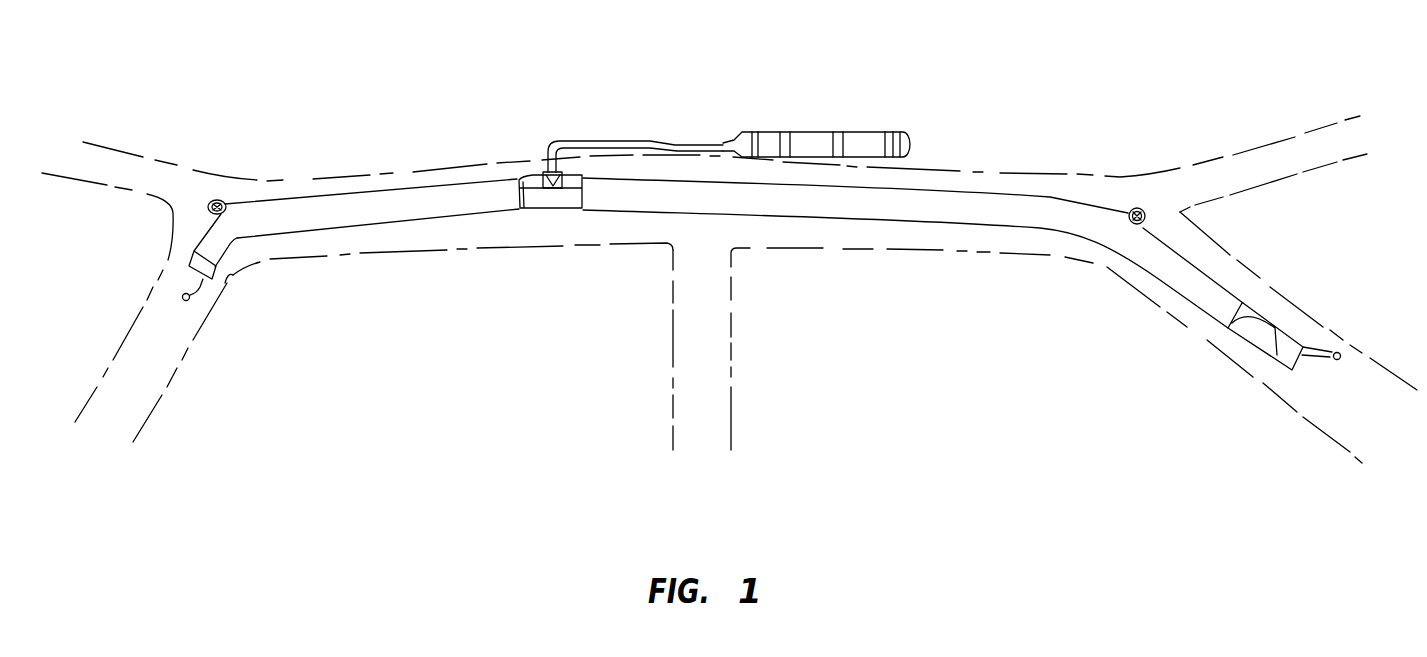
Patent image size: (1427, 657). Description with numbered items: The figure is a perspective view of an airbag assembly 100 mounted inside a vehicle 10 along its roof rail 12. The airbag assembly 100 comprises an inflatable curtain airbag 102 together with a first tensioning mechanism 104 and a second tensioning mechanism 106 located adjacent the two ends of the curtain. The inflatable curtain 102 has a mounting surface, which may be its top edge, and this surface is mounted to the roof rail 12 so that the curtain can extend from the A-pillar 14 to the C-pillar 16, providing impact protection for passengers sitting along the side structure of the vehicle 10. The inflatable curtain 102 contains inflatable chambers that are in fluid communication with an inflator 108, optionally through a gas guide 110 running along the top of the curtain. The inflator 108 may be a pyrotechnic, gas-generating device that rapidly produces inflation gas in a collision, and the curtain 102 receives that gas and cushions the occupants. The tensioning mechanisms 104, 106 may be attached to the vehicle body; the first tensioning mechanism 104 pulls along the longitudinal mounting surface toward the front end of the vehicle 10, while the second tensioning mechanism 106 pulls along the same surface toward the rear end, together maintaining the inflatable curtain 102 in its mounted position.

The vehicle 10 is at (160, 419).
The roof rail 12 is at (432, 177).
The A-pillar 14 is at (1333, 410).
The C-pillar 16 is at (163, 358).
The airbag assembly 100 is at (751, 208).
The inflatable curtain airbag 102 is at (984, 192).
The first tensioning mechanism 104 is at (1147, 207).
The second tensioning mechanism 106 is at (213, 197).
The inflator 108 is at (810, 137).
The gas guide 110 is at (627, 138).